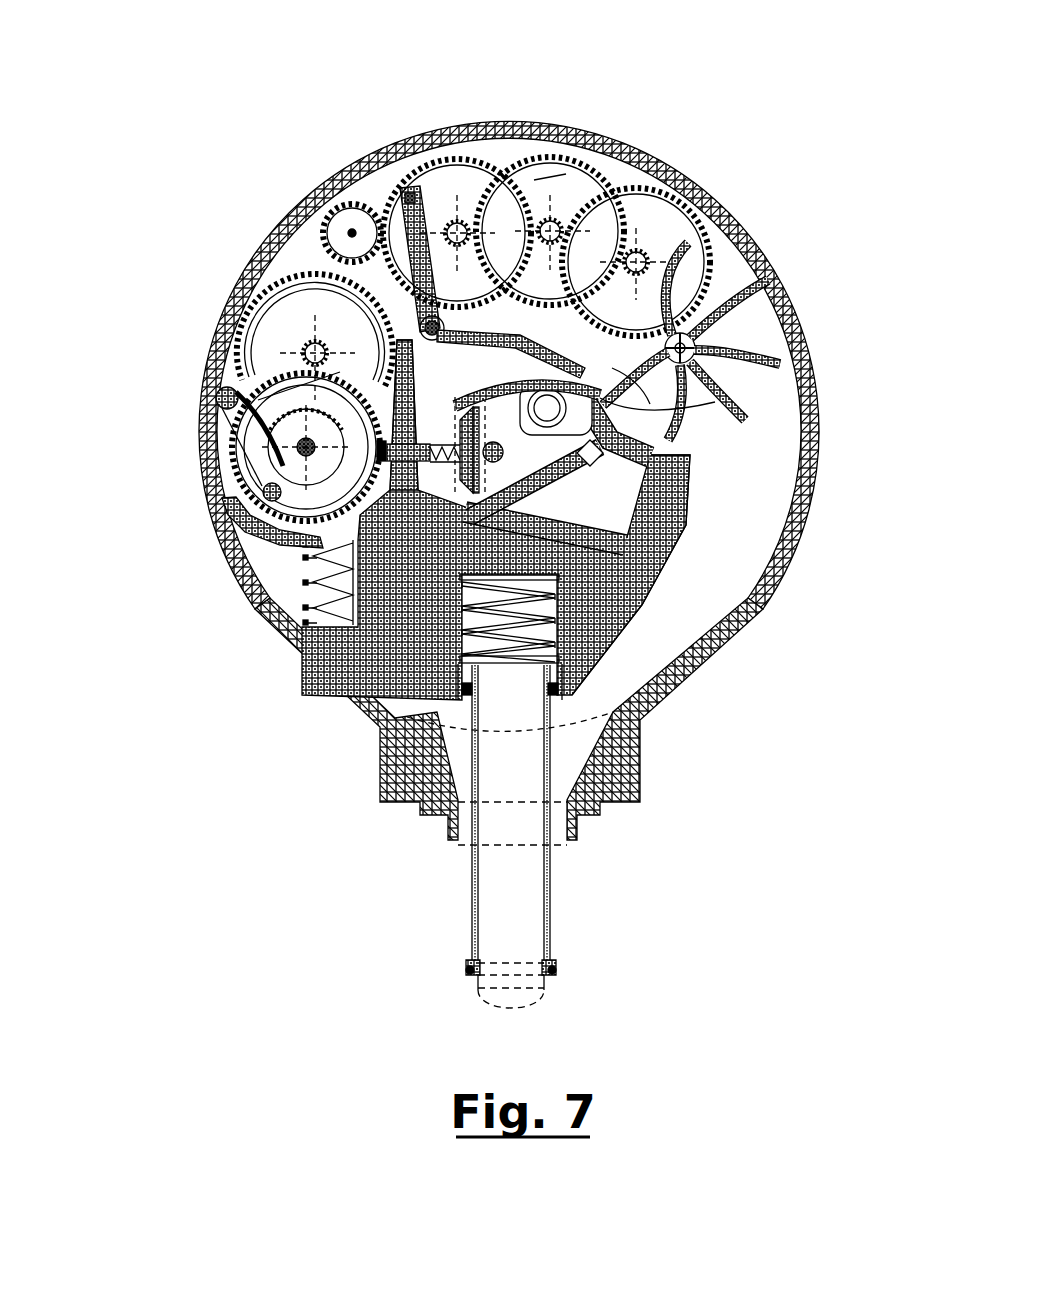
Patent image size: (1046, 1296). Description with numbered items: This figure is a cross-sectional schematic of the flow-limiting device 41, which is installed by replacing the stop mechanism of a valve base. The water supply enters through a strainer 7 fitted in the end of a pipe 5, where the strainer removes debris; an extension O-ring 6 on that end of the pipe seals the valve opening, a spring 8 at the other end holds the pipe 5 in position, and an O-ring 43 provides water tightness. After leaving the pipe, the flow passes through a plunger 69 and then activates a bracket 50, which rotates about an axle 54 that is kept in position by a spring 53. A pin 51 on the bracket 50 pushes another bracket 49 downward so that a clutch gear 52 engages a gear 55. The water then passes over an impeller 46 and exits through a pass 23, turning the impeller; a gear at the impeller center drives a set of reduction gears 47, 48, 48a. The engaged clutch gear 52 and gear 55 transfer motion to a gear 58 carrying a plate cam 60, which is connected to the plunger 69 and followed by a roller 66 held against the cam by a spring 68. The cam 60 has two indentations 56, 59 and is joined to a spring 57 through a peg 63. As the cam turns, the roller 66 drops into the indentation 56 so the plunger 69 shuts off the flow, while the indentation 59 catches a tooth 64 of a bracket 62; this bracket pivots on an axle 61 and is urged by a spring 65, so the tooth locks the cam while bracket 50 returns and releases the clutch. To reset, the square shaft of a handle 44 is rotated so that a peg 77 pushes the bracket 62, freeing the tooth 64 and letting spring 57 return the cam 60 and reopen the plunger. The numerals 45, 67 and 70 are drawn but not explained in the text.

The pipe 5 is at (550, 903).
The extension O-ring 6 is at (560, 972).
The strainer 7 is at (535, 1000).
The spring 8 is at (557, 635).
The pass 23 is at (570, 800).
The device 41 is at (812, 432).
The O-ring 43 is at (560, 688).
The handle 44 is at (613, 453).
The fan blade 45 is at (582, 382).
The impeller 46 is at (742, 298).
The reduction gear 47 is at (683, 220).
The reduction gear 48 is at (586, 158).
The reduction gear 48a is at (453, 192).
The bracket 49 is at (464, 215).
The bracket 50 is at (415, 192).
The pin 51 is at (400, 185).
The clutch gear 52 is at (335, 212).
The spring 53 is at (428, 323).
The axle 54 is at (412, 330).
The gear 55 is at (283, 318).
The indentation 56 is at (278, 400).
The spring 57 is at (226, 392).
The gear 58 is at (275, 423).
The indentation 59 is at (300, 450).
The plate cam 60 is at (263, 494).
The axle 61 is at (228, 507).
The bracket 62 is at (242, 527).
The peg 63 is at (270, 525).
The tooth 64 is at (330, 545).
The spring 65 is at (313, 540).
The roller 66 is at (355, 530).
The piston column 67 is at (382, 527).
The spring 68 is at (425, 510).
The plunger 69 is at (452, 500).
The valve plate 70 is at (482, 492).
The peg 77 is at (547, 408).